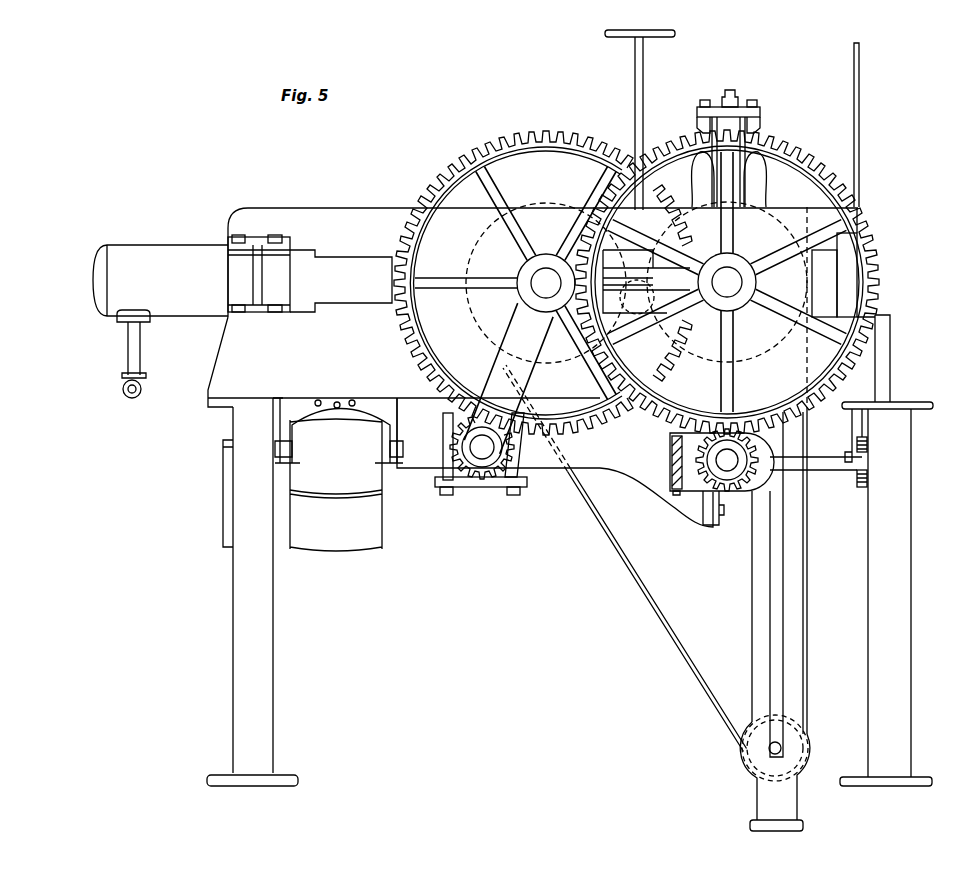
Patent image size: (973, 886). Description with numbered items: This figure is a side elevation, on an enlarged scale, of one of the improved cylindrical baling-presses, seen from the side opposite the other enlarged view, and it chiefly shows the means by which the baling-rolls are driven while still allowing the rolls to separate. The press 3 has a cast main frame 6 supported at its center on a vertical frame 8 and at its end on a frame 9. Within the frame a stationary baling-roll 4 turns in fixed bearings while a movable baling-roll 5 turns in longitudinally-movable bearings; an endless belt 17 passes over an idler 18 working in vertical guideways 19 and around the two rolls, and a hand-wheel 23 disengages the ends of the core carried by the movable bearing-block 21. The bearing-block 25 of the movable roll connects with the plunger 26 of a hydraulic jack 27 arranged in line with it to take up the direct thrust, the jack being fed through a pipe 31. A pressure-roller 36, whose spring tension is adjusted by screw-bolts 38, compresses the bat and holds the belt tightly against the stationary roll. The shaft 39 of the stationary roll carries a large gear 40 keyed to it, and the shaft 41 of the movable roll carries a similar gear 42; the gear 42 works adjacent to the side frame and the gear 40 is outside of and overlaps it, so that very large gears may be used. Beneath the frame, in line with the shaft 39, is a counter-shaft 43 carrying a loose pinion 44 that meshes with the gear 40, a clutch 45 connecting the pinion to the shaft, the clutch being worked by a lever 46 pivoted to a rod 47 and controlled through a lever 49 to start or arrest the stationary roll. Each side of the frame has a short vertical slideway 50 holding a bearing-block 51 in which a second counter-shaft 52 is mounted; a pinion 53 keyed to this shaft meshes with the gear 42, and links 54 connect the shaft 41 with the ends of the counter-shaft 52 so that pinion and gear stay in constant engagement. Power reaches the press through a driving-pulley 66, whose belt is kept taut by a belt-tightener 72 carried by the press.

The press 3 is at (878, 346).
The baling-roll 4 is at (780, 214).
The baling-roll 5 is at (550, 205).
The frame 6 is at (533, 367).
The vertical frame 8 is at (886, 583).
The frame 9 is at (252, 592).
The endless belt 17 is at (625, 558).
The idler 18 is at (810, 748).
The vertical guideway 19 is at (752, 633).
The bearing-block 21 is at (646, 284).
The hand-wheel 23 is at (640, 120).
The bearing-block 25 is at (455, 262).
The plunger 26 is at (341, 281).
The hydraulic jack 27 is at (160, 280).
The pipe 31 is at (143, 354).
The pressure-roller 36 is at (766, 176).
The screw-bolt 38 is at (728, 139).
The shaft 39 is at (727, 282).
The gear 40 is at (727, 280).
The shaft 41 is at (546, 283).
The gear 42 is at (543, 275).
The counter-shaft 43 is at (727, 460).
The pinion 44 is at (745, 493).
The clutch 45 is at (700, 500).
The lever 46 is at (825, 456).
The rod 47 is at (670, 460).
The lever 49 is at (871, 125).
The vertical slideway 50 is at (455, 495).
The bearing-block 51 is at (443, 432).
The counter-shaft 52 is at (482, 448).
The pinion 53 is at (490, 478).
The link 54 is at (553, 357).
The driving-pulley 66 is at (336, 520).
The belt-tightener 72 is at (339, 445).